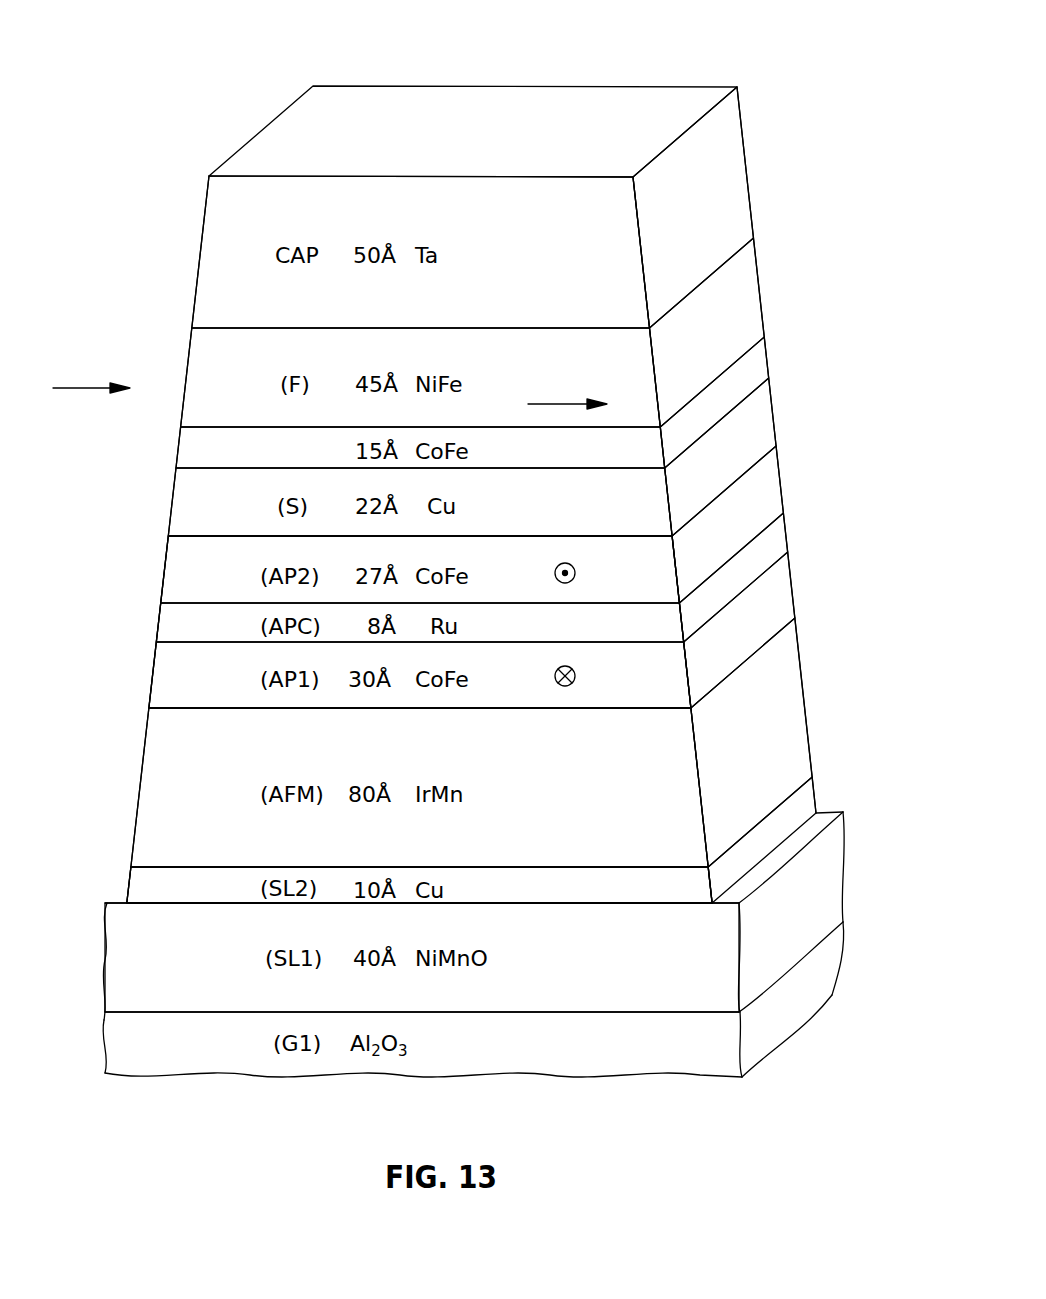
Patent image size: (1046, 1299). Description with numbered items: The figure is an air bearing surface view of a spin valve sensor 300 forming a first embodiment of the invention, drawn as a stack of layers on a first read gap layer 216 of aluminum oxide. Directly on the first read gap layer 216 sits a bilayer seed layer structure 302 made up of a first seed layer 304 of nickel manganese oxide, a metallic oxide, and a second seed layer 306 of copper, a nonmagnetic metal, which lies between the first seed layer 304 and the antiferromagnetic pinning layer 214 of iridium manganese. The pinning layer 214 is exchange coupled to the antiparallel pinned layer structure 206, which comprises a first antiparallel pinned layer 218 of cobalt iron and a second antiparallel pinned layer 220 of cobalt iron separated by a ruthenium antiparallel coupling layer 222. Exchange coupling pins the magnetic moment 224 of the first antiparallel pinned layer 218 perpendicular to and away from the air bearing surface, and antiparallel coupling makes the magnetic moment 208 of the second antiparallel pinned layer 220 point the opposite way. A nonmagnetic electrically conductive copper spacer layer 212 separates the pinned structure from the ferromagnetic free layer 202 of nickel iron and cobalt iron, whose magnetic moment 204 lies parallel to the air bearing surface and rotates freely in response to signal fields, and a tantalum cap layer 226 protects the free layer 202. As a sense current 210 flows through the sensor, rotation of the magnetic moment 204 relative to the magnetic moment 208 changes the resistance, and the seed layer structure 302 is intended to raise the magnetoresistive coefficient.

The spin valve sensor 300 is at (653, 45).
The cap layer 226 is at (740, 153).
The ferromagnetic free layer 202 is at (760, 363).
The spacer layer 212 is at (766, 410).
The second antiparallel pinned layer 220 is at (774, 478).
The antiparallel coupling layer 222 is at (780, 542).
The first antiparallel pinned layer 218 is at (788, 596).
The pinned layer structure 206 is at (155, 536).
The pinning layer 214 is at (797, 682).
The second seed layer 306 is at (808, 795).
The first seed layer 304 is at (828, 895).
The first read gap layer 216 is at (825, 1000).
The seed layer structure 302 is at (43, 867).
The magnetic moment 204 is at (551, 403).
The magnetic moment 208 is at (565, 562).
The magnetic moment 224 is at (565, 687).
The sense current 210 is at (77, 390).